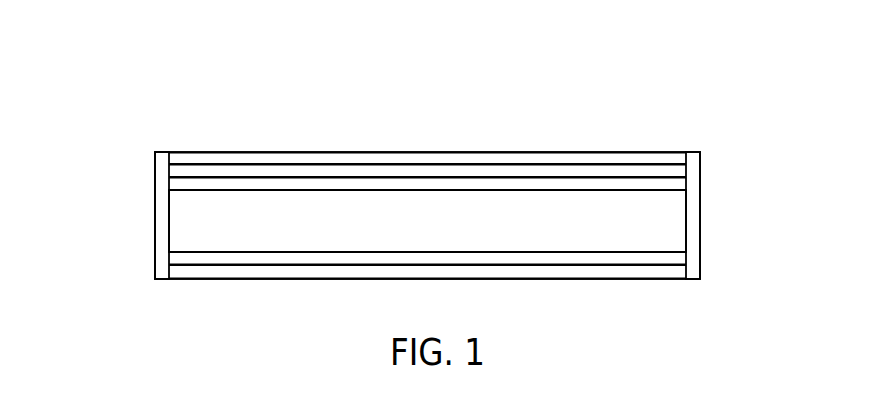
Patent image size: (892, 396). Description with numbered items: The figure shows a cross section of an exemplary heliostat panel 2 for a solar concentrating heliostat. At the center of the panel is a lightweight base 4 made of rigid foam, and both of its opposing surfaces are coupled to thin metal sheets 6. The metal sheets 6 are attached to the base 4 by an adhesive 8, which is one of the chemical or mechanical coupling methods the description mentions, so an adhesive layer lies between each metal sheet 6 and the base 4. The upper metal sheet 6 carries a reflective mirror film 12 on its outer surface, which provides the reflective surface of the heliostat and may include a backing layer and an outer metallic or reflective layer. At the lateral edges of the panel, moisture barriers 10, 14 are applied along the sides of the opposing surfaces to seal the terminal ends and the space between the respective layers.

The insulated panel assembly 2 is at (462, 60).
The lightweight base 4 is at (497, 237).
The metal sheets 6 is at (584, 272).
The adhesive 8 is at (669, 199).
The moisture barrier 10 is at (703, 185).
The mirror film 12 is at (343, 151).
The moisture barrier 14 is at (155, 212).